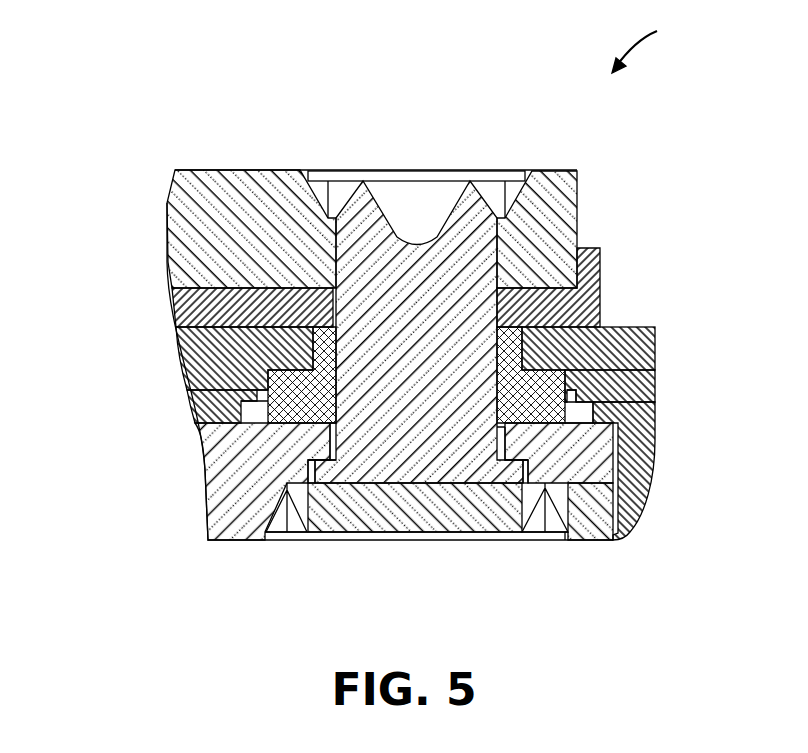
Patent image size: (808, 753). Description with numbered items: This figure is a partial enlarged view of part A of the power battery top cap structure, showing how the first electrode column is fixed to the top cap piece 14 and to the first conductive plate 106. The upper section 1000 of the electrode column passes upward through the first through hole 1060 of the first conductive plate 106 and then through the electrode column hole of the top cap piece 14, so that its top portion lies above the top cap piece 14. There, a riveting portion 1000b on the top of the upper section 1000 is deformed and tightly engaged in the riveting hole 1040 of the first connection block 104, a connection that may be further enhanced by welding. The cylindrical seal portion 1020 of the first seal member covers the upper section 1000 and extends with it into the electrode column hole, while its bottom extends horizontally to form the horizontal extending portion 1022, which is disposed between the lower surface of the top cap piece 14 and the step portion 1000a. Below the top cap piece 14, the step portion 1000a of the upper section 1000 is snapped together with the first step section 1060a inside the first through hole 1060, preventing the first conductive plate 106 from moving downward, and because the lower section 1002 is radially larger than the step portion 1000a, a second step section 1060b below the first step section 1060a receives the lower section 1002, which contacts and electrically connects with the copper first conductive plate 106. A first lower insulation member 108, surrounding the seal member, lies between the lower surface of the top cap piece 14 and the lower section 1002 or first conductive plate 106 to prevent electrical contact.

The part A is at (649, 43).
The first connection block 104 is at (229, 218).
The riveting hole 1040 is at (354, 178).
The riveting portion 1000b is at (470, 205).
The upper section 1000 is at (460, 292).
The cylindrical seal portion 1020 is at (328, 350).
The top cap piece 14 is at (630, 350).
The horizontal extending portion 1022 is at (528, 397).
The first lower insulation member 108 is at (632, 482).
The first conductive plate 106 is at (217, 512).
The lower section 1002 is at (322, 507).
The first through hole 1060 is at (431, 541).
The first step section 1060a is at (325, 462).
The second step section 1060b is at (302, 484).
The step portion 1000a is at (515, 470).